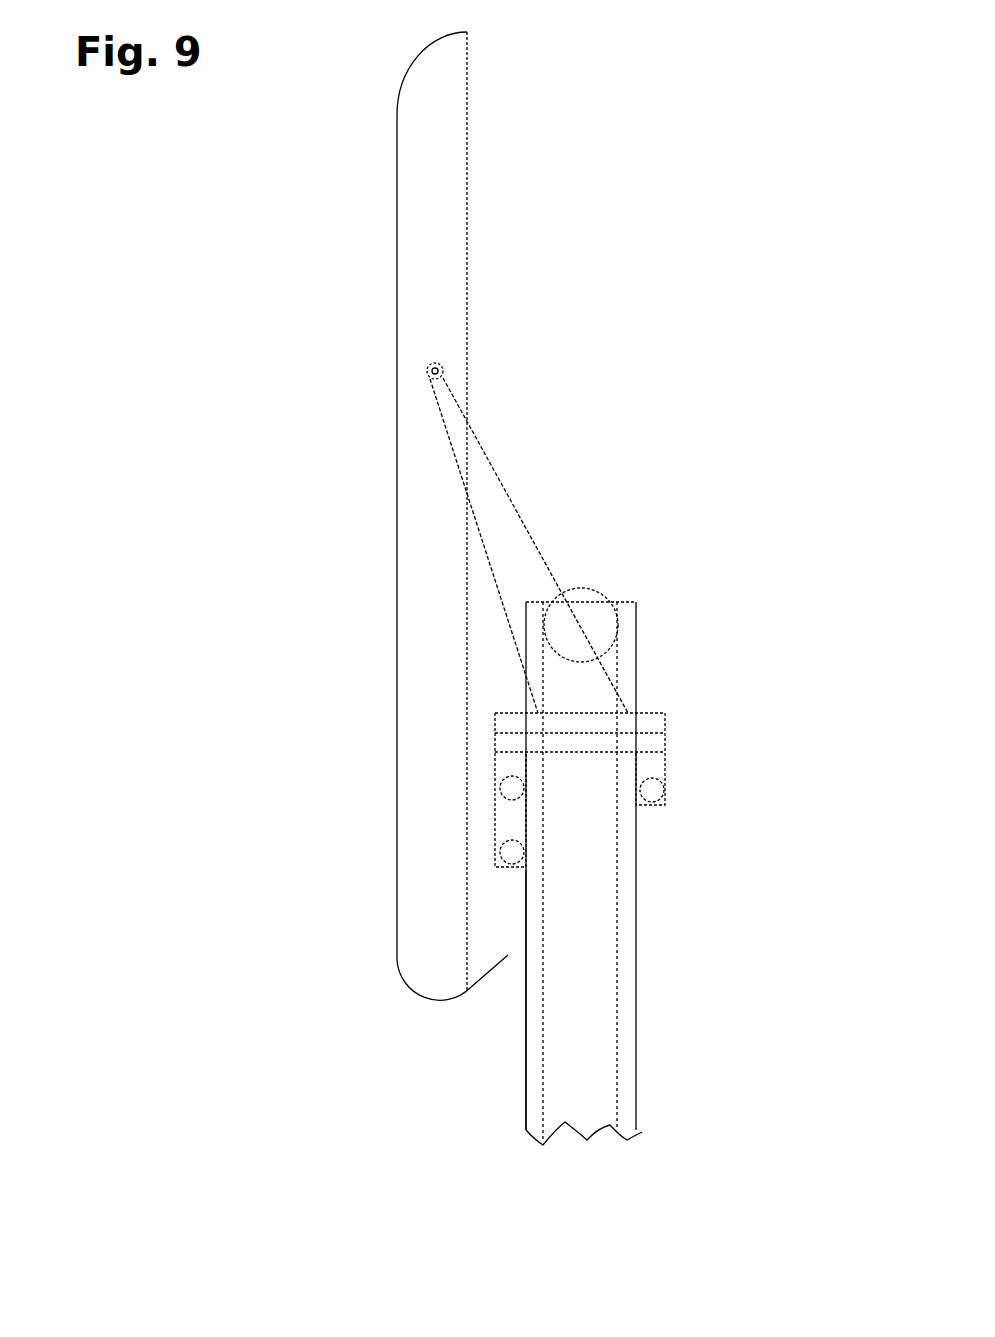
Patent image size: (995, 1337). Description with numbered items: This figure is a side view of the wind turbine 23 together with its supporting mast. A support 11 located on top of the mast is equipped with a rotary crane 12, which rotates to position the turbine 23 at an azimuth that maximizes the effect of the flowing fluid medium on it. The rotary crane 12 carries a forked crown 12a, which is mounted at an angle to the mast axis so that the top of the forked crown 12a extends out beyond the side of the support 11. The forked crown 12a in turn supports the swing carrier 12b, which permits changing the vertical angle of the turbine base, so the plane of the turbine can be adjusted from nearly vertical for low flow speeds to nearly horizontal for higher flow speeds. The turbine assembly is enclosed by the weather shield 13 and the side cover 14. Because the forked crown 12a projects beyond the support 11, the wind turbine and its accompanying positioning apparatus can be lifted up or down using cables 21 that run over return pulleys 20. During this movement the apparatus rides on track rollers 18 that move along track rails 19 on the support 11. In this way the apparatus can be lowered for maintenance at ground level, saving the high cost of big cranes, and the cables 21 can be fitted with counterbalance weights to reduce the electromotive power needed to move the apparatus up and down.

The wind turbine 23 is at (195, 244).
The swing carrier 12b is at (428, 371).
The forked crown 12a is at (497, 506).
The weather shield 13 is at (397, 555).
The side cover 14 is at (422, 603).
The return pulleys 20 is at (563, 653).
The rotary crane 12 is at (665, 722).
The track rollers 18 is at (512, 789).
The cables 21 is at (543, 905).
The track rails 19 is at (526, 1025).
The support 11 is at (577, 1076).